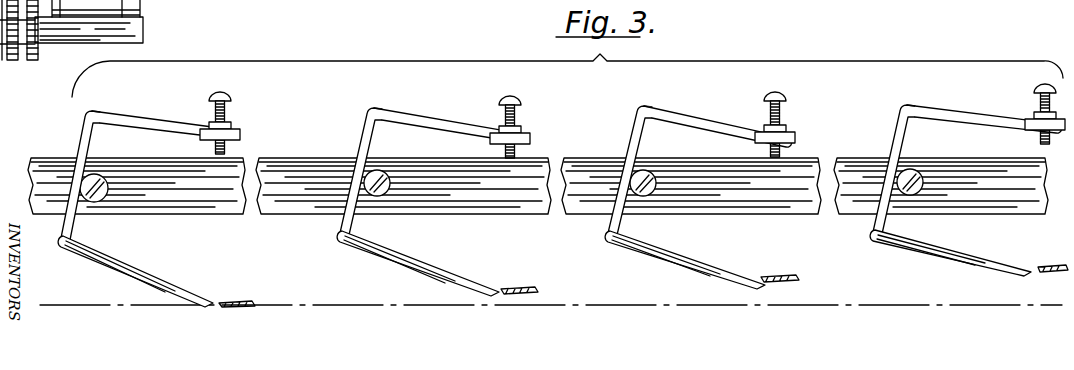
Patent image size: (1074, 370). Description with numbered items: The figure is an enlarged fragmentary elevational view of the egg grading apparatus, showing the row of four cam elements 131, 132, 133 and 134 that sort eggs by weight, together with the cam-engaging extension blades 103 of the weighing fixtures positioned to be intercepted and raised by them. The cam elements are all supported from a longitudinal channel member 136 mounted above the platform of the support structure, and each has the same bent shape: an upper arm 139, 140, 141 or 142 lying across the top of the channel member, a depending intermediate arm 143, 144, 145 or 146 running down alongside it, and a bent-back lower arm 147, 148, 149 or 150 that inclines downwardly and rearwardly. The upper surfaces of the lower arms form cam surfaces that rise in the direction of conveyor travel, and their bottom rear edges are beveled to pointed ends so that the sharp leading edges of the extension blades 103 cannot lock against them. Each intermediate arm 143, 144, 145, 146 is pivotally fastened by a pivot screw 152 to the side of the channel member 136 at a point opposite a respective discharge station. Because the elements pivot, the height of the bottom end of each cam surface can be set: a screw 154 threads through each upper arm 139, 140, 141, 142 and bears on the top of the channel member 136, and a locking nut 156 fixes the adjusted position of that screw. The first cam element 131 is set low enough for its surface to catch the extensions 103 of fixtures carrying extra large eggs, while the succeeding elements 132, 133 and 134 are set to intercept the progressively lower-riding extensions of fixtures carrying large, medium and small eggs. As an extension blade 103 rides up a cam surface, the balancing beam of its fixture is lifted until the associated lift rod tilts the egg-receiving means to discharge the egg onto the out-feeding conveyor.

The cam engaging extension blade 103 is at (242, 300).
The cam element 131 is at (946, 154).
The cam element 132 is at (680, 152).
The cam element 133 is at (408, 150).
The cam element 134 is at (131, 154).
The longitudinal channel member 136 is at (592, 207).
The upper arm 139 is at (958, 118).
The upper arm 140 is at (683, 118).
The upper arm 141 is at (422, 118).
The upper arm 142 is at (140, 116).
The intermediate arm 143 is at (898, 132).
The intermediate arm 144 is at (632, 137).
The intermediate arm 145 is at (360, 138).
The intermediate arm 146 is at (78, 137).
The lower arm 147 is at (900, 246).
The lower arm 148 is at (655, 256).
The lower arm 149 is at (400, 260).
The lower arm 150 is at (125, 271).
The pivot screw 152 is at (103, 198).
The screw 154 is at (232, 98).
The locking nut 156 is at (238, 130).